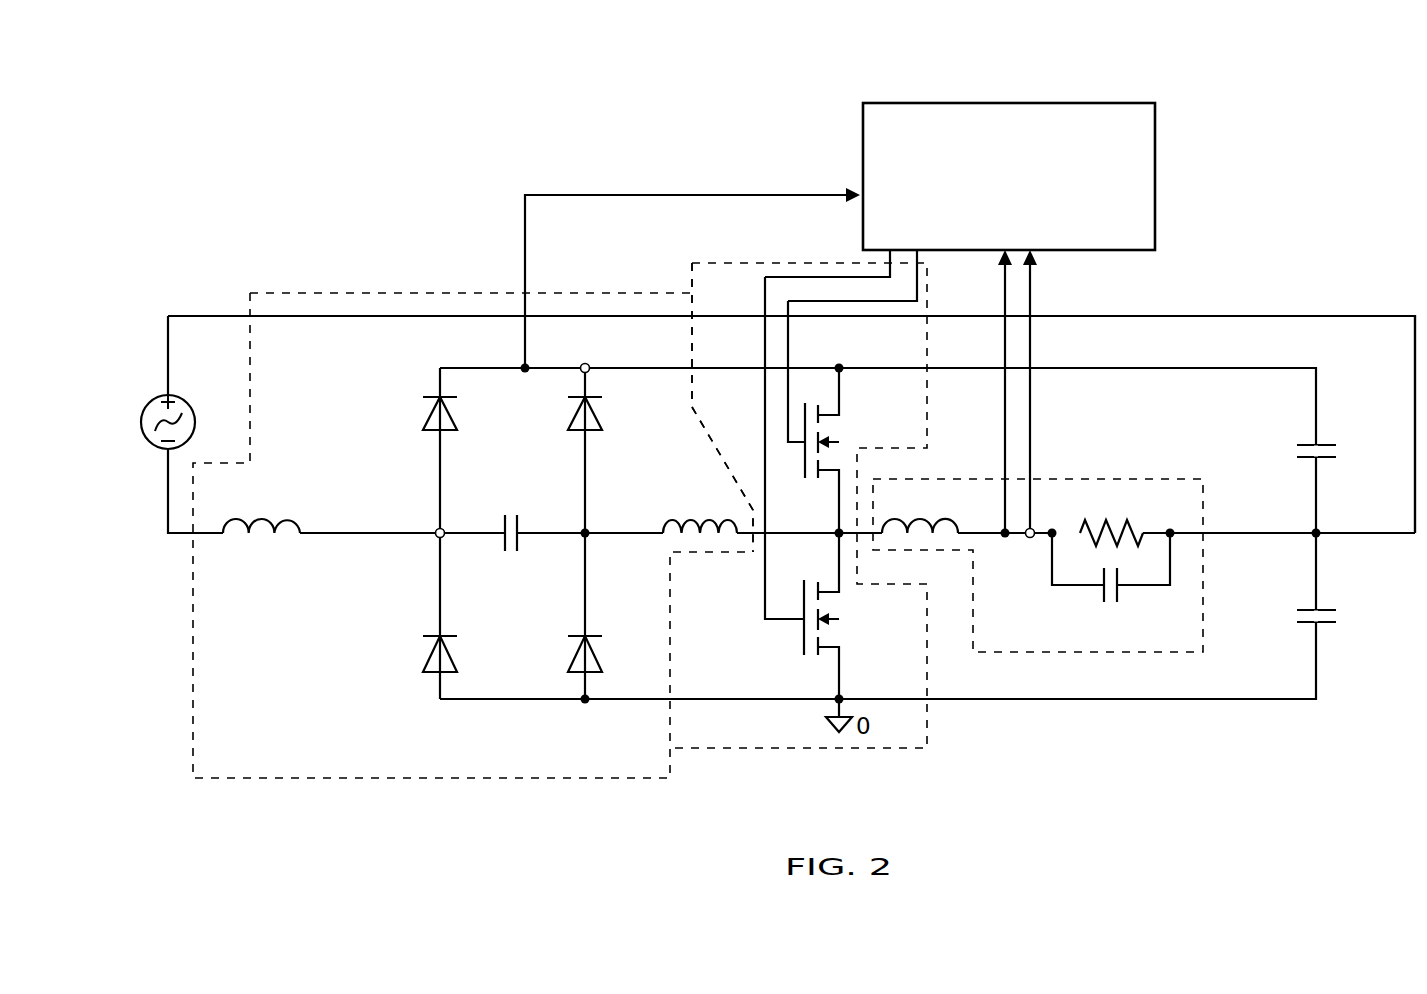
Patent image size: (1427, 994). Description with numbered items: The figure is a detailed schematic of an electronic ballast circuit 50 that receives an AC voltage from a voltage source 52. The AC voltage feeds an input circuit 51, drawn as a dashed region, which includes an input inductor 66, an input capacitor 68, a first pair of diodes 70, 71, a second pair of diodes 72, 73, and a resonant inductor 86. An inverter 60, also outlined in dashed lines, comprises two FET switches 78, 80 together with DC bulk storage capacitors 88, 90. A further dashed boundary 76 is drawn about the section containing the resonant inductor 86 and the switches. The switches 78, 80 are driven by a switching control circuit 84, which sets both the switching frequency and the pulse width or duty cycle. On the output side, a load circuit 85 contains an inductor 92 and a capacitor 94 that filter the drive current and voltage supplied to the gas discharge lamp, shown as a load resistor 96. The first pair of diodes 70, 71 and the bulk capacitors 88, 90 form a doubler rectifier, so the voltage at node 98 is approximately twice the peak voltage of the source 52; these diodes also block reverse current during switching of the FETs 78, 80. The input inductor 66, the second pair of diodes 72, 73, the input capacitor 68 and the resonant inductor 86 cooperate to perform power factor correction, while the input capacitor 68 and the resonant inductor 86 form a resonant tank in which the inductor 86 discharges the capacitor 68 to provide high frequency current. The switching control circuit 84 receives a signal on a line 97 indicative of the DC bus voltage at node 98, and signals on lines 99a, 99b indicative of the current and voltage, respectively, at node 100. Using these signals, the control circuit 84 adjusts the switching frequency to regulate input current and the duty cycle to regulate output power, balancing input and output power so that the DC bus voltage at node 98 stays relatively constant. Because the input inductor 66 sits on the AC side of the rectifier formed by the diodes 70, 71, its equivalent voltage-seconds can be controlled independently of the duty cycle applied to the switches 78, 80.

The electronic ballast circuit 50 is at (1256, 128).
The input circuit 51 is at (319, 286).
The voltage source 52 is at (158, 398).
The inverter 60 is at (928, 302).
The inductor La 66 is at (262, 540).
The capacitor Ca 68 is at (500, 541).
The diode D1 70 is at (455, 422).
The diode D2 71 is at (455, 661).
The diode Da 72 is at (600, 422).
The diode Db 73 is at (600, 661).
The boost section boundary 76 is at (694, 369).
The switch M1 78 is at (830, 438).
The switch M2 80 is at (838, 617).
The switching control circuit 84 is at (1090, 103).
The load circuit 85 is at (1122, 479).
The inductor L1 86 is at (665, 520).
The DC bulk storage capacitor C1 88 is at (1328, 446).
The DC bulk storage capacitor C2 90 is at (1328, 611).
The inductor 92 is at (905, 520).
The capacitor 94 is at (1103, 601).
The load RL 96 is at (1130, 526).
The line 97 is at (525, 222).
The node 98 is at (523, 366).
The line 99a is at (1004, 440).
The line 99b is at (1052, 440).
The node 100 is at (1028, 538).